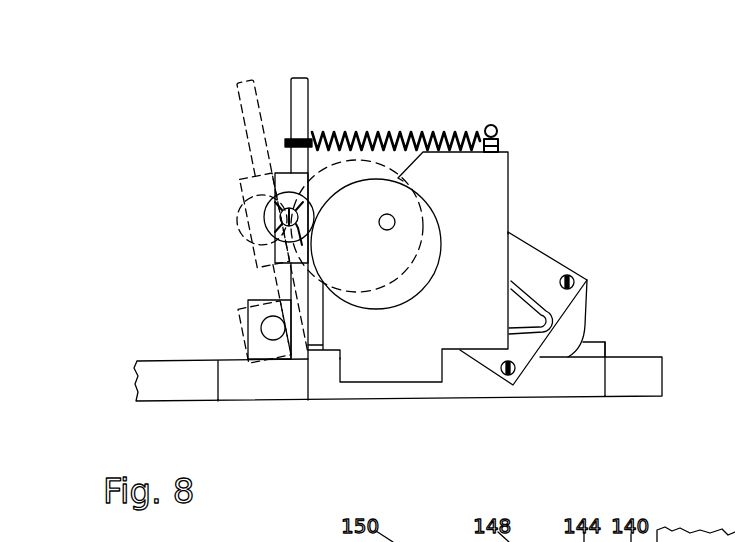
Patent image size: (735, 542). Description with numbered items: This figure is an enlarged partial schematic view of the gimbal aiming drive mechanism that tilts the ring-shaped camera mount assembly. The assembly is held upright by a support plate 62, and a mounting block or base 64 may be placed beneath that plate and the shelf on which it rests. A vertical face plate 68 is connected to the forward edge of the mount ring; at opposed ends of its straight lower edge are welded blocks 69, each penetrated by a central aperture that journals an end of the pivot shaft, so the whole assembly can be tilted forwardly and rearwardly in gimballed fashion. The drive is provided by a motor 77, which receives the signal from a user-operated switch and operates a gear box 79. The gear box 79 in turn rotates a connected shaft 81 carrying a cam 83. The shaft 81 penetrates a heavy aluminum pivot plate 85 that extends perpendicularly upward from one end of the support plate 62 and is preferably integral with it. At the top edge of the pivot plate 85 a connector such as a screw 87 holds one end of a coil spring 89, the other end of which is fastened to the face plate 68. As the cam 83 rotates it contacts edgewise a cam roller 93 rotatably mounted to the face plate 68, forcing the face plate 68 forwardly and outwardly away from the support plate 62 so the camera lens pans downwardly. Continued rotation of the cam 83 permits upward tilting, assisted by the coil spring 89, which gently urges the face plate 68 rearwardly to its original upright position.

The support plate 62 is at (590, 348).
The base 64 is at (584, 380).
The face plate 68 is at (240, 110).
The blocks 69 is at (258, 314).
The motor 77 is at (557, 347).
The gear box 79 is at (535, 263).
The shaft 81 is at (393, 219).
The cam 83 is at (368, 276).
The pivot plate 85 is at (497, 203).
The screw 87 is at (493, 126).
The coil spring 89 is at (387, 138).
The cam roller 93 is at (281, 218).